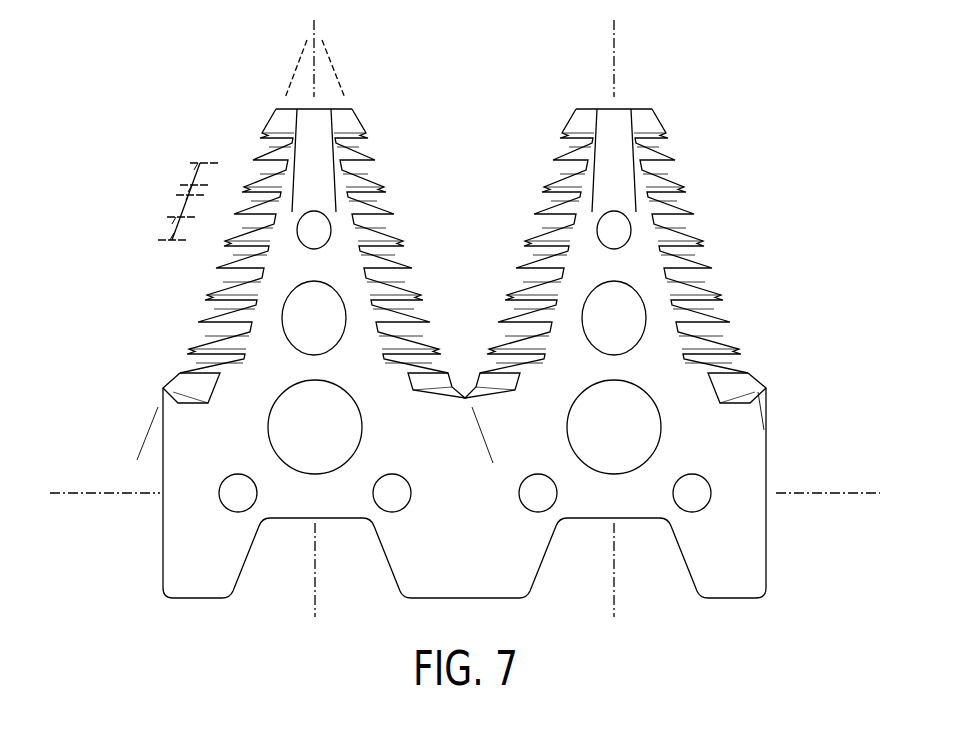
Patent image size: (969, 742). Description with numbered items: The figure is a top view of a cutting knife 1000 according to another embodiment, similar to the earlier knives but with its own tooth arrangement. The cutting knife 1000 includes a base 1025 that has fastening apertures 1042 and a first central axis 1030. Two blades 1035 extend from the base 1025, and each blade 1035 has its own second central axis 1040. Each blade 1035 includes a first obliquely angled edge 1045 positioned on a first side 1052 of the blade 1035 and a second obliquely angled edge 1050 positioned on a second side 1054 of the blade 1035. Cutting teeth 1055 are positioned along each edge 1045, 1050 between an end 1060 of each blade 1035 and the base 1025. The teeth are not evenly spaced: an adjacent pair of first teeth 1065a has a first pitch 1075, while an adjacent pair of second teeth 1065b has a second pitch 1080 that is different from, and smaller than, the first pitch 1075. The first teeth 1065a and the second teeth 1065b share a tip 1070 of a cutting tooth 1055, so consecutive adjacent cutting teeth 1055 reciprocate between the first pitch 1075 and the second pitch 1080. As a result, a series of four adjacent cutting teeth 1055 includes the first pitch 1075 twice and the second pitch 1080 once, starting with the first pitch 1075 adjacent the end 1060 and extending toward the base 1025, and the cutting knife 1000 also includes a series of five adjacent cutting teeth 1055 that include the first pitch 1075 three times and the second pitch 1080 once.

The cutting knife 1000 is at (852, 56).
The base 1025 is at (737, 600).
The first central axis 1030 is at (832, 492).
The blade 1035 is at (320, 149).
The second central axis 1040 is at (312, 618).
The fastening aperture 1042 is at (220, 503).
The first obliquely angled edge 1045 is at (143, 437).
The second obliquely angled edge 1050 is at (480, 438).
The first side 1052 is at (222, 126).
The second side 1054 is at (414, 152).
The cutting teeth 1055 is at (429, 233).
The end 1060 is at (285, 108).
The first teeth 1065a is at (196, 168).
The second teeth 1065b is at (187, 190).
The tip 1070 is at (683, 185).
The first pitch 1075 is at (140, 191).
The second pitch 1080 is at (138, 174).